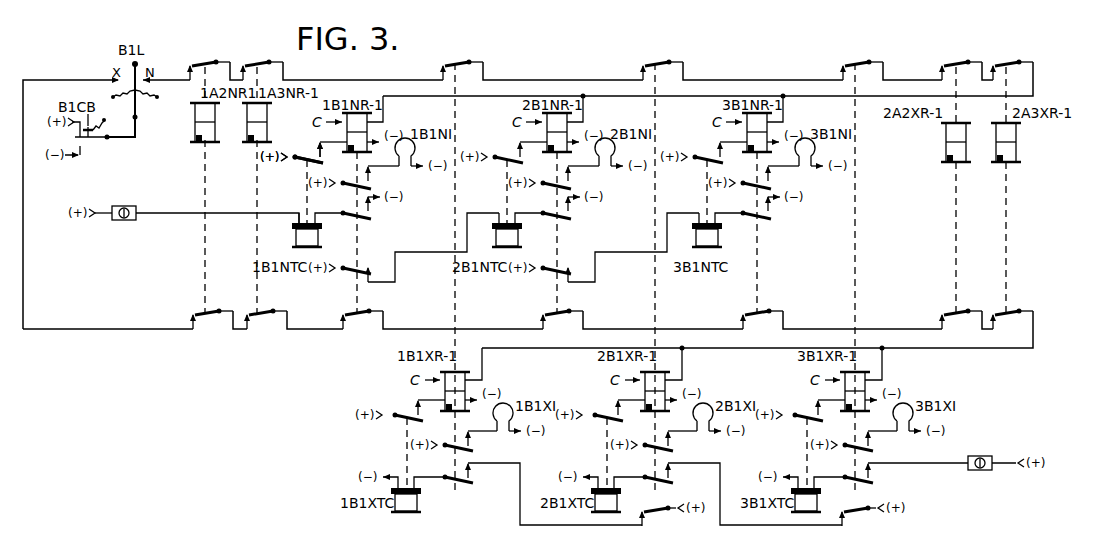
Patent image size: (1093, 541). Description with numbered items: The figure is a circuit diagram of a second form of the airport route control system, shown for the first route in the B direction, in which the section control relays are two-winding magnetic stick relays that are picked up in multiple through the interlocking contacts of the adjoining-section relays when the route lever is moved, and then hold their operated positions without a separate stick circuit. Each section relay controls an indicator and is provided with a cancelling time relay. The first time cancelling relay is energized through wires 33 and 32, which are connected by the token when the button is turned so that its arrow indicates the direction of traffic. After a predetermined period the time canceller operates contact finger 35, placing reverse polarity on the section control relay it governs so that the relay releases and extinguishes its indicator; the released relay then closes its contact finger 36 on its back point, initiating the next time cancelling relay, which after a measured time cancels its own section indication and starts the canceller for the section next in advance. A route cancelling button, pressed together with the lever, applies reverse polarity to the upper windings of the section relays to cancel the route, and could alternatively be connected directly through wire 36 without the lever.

The wire 32 is at (154, 215).
The wire 33 is at (104, 215).
The contact finger 35 is at (311, 160).
The contact finger 36 is at (378, 266).